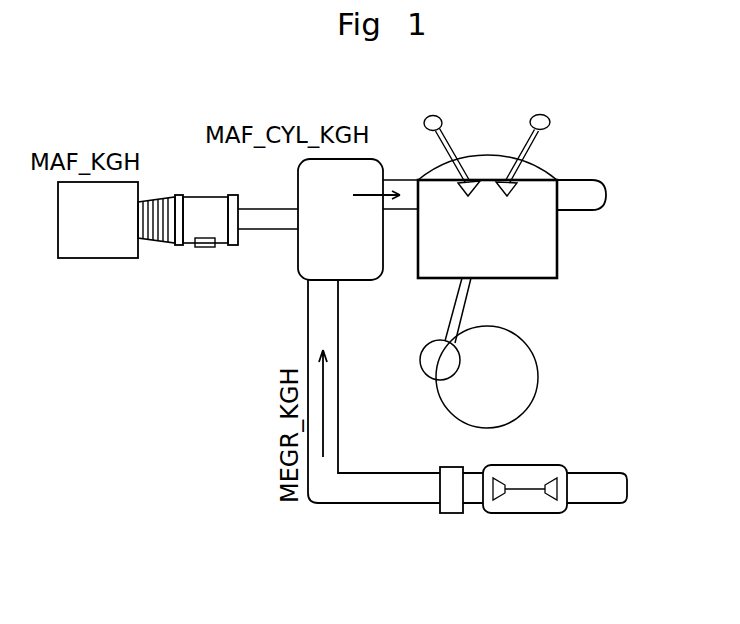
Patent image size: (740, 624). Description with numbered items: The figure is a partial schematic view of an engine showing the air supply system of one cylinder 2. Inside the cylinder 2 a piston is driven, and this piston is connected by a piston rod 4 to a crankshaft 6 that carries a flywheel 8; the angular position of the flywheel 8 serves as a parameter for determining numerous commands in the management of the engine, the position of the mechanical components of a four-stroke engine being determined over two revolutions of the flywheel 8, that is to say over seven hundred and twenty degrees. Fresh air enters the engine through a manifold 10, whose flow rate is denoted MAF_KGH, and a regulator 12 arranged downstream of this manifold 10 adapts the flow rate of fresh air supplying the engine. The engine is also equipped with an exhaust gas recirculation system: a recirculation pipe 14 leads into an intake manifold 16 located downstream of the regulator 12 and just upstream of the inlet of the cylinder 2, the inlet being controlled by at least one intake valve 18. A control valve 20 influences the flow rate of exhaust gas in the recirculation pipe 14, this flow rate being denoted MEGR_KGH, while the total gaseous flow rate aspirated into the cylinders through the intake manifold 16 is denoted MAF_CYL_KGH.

The cylinder 2 is at (593, 197).
The piston rod 4 is at (467, 293).
The crankshaft 6 is at (433, 364).
The flywheel 8 is at (527, 399).
The manifold 10 is at (86, 248).
The regulator 12 is at (210, 238).
The recirculation pipe 14 is at (390, 497).
The intake manifold 16 is at (312, 255).
The intake valve 18 is at (455, 142).
The control valve 20 is at (527, 501).